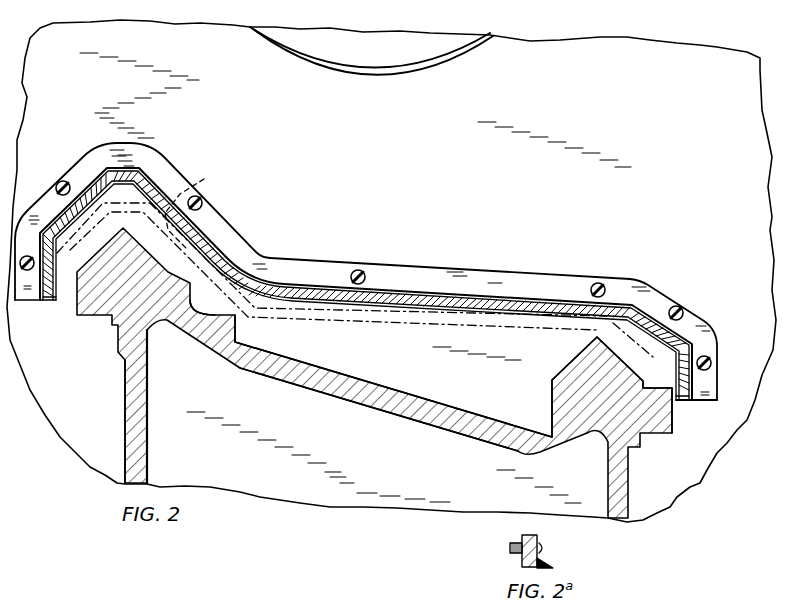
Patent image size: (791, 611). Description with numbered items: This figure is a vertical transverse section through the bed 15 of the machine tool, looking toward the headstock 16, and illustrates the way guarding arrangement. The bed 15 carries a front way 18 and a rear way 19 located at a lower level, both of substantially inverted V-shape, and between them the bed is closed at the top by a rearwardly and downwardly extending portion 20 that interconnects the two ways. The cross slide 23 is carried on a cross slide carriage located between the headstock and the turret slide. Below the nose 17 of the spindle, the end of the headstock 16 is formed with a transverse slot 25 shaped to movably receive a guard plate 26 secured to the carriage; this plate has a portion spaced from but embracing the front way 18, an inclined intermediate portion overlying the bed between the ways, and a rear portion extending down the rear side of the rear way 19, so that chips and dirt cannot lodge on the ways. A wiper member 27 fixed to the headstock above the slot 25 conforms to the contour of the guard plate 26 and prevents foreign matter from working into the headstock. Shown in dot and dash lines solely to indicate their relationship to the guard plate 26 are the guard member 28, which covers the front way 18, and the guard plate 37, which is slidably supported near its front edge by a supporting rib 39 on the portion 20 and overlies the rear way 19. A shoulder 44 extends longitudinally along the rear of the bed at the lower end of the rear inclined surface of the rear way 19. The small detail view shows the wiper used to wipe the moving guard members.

The bed 15 is at (127, 411).
The headstock 16 is at (397, 172).
The nose 17 is at (362, 49).
The front way 18 is at (78, 303).
The rear way 19 is at (553, 393).
The rearwardly and downwardly extending portion 20 is at (415, 400).
The cross slide 23 is at (341, 602).
The slot 25 is at (270, 283).
The guard plate 26 is at (440, 300).
The wiper member 27 is at (658, 292).
The guard member 28 is at (202, 202).
The guard plate 37 is at (344, 314).
The supporting rib 39 is at (235, 318).
The shoulder 44 is at (677, 402).